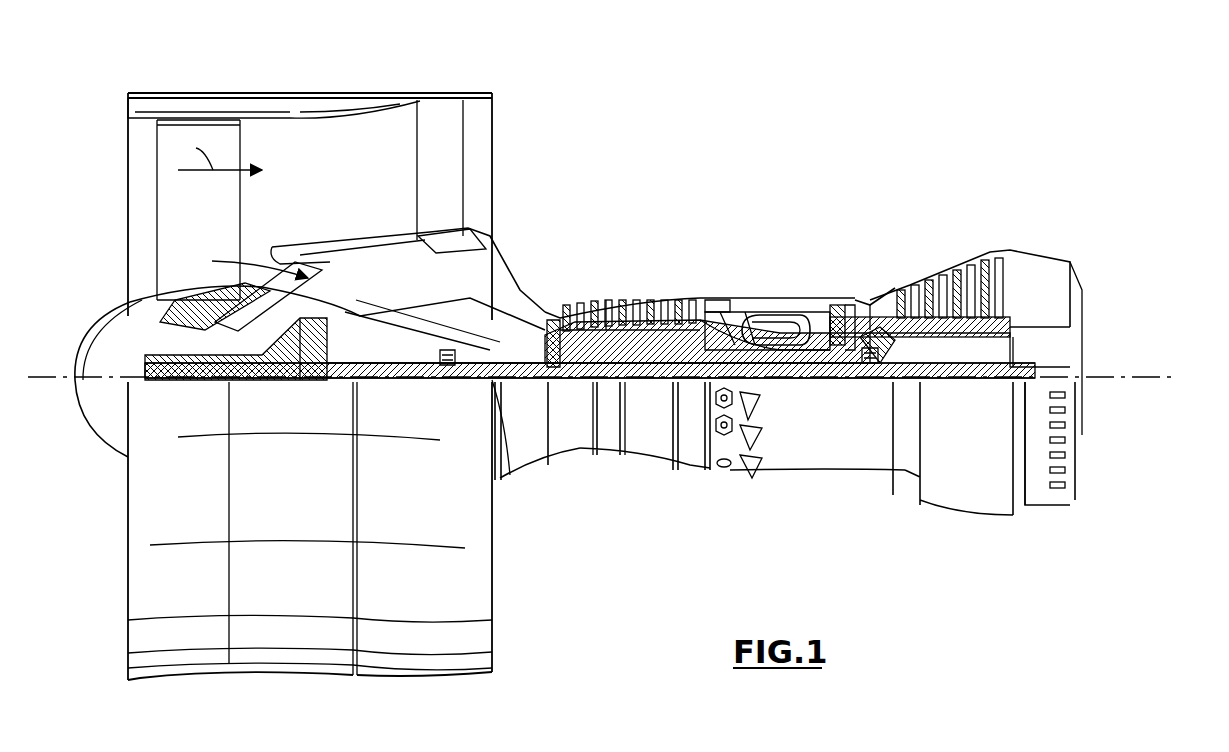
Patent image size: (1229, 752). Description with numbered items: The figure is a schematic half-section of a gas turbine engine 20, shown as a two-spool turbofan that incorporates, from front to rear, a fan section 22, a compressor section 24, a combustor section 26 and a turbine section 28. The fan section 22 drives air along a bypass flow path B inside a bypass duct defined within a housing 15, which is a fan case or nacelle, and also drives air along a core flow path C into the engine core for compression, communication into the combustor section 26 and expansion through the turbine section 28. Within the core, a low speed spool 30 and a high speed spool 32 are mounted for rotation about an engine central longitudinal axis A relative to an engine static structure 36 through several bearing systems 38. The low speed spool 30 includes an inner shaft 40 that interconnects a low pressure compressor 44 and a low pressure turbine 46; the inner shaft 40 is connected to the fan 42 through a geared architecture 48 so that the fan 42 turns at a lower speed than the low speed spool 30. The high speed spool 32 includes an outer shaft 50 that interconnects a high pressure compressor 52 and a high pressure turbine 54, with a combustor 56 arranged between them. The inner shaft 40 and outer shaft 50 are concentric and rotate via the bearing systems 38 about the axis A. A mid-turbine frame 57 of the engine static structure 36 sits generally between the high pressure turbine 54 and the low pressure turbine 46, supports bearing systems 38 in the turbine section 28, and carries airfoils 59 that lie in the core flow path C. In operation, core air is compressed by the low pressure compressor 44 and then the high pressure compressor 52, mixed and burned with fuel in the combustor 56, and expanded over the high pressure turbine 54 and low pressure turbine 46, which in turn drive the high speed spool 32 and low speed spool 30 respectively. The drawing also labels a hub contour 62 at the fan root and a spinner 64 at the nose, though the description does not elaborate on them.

The gas turbine engine 20 is at (770, 150).
The fan section 22 is at (240, 88).
The compressor section 24 is at (542, 282).
The combustor section 26 is at (766, 276).
The turbine section 28 is at (913, 236).
The housing 15 is at (310, 100).
The fan 42 is at (210, 226).
The low pressure compressor 44 is at (417, 282).
The low pressure turbine 46 is at (960, 272).
The geared architecture 48 is at (313, 363).
The outer shaft 50 is at (773, 373).
The high pressure compressor 52 is at (617, 333).
The high pressure turbine 54 is at (830, 307).
The combustor 56 is at (767, 320).
The mid-turbine frame 57 is at (873, 288).
The airfoils 59 is at (882, 328).
The low speed spool 30 is at (648, 385).
The high speed spool 32 is at (693, 330).
The engine static structure 36 is at (690, 468).
The bearing systems 38 is at (447, 373).
The inner shaft 40 is at (508, 383).
The fan hub contour 62 is at (170, 295).
The spinner 64 is at (125, 312).
The engine central longitudinal axis A is at (1172, 377).
The bypass flow path B is at (196, 150).
The core flow path C is at (250, 262).